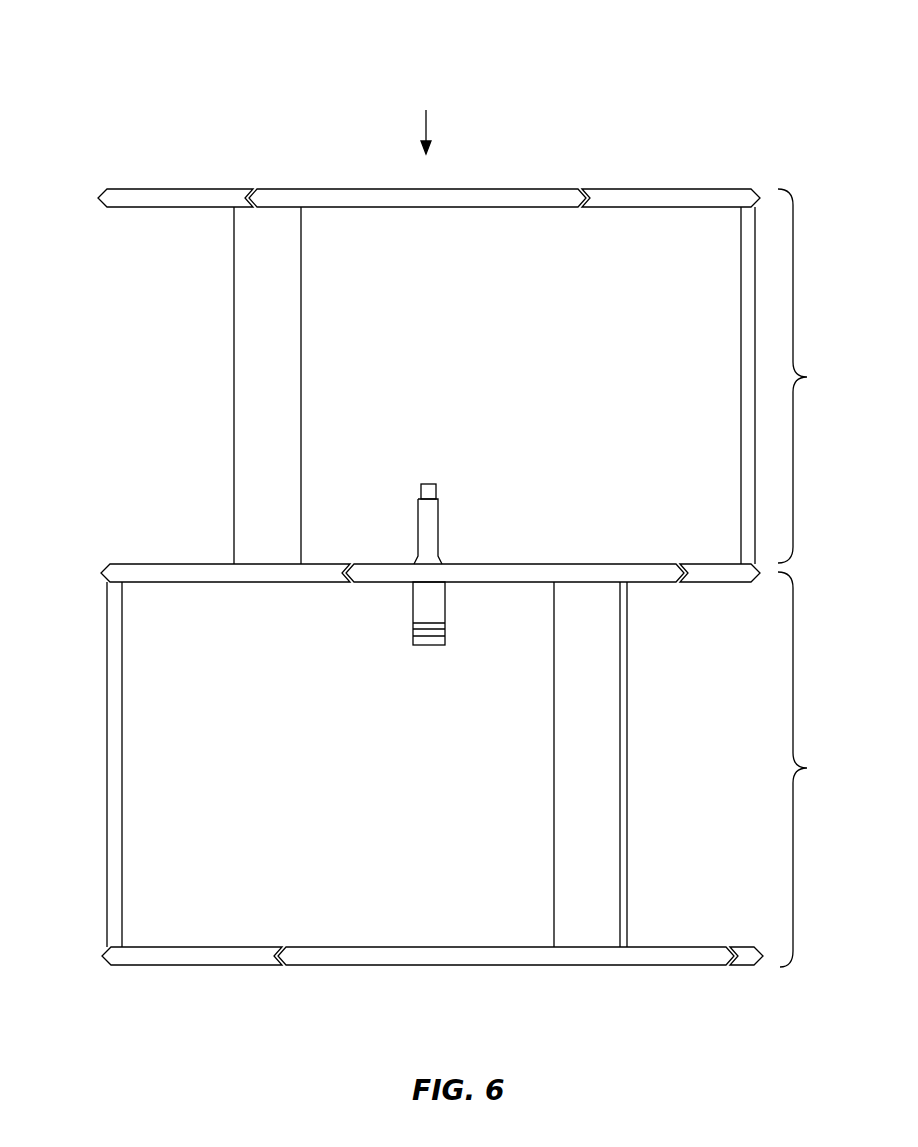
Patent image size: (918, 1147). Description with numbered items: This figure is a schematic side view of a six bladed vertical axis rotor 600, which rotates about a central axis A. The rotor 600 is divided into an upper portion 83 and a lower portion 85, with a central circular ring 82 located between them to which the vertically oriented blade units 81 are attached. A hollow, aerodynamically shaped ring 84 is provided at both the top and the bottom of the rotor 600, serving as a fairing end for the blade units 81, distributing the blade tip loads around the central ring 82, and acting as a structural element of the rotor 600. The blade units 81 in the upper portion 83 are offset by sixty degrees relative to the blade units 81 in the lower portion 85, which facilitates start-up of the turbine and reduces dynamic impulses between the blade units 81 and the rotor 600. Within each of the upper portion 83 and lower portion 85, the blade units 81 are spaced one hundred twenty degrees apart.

The six bladed vertical axis rotor 600 is at (126, 46).
The blade unit 81 is at (288, 373).
The central circular ring 82 is at (697, 570).
The upper portion 83 is at (809, 376).
The aerodynamically shaped ring 84 is at (673, 197).
The lower portion 85 is at (809, 769).